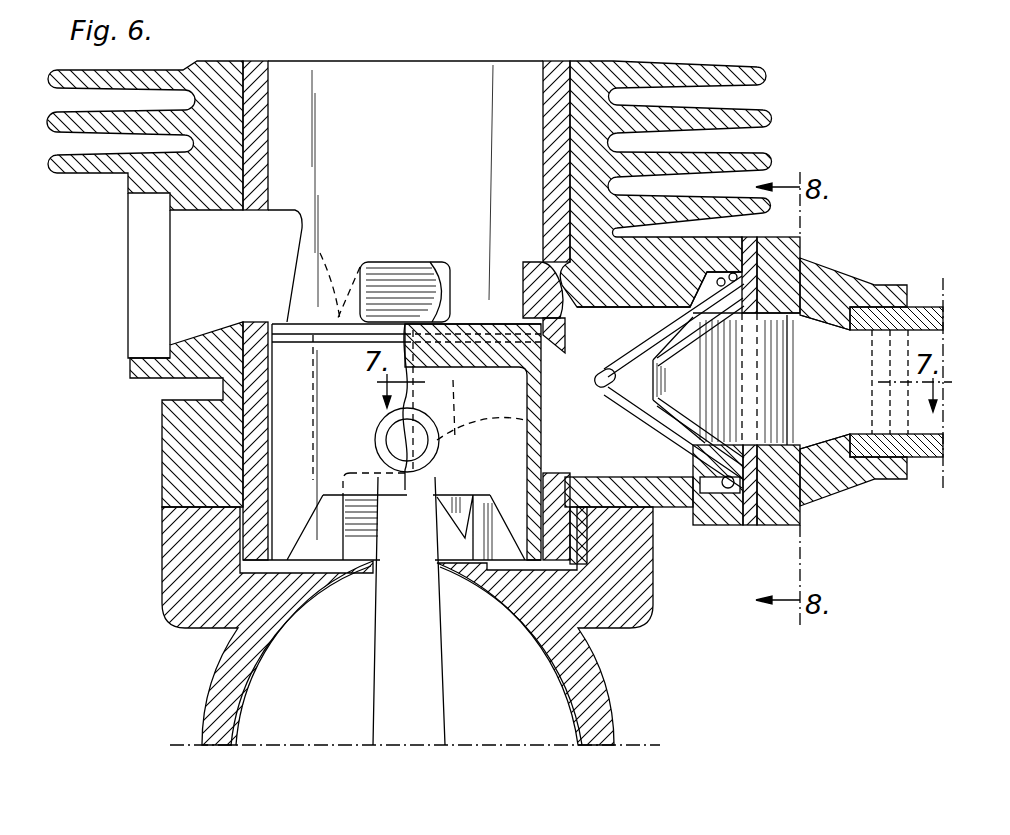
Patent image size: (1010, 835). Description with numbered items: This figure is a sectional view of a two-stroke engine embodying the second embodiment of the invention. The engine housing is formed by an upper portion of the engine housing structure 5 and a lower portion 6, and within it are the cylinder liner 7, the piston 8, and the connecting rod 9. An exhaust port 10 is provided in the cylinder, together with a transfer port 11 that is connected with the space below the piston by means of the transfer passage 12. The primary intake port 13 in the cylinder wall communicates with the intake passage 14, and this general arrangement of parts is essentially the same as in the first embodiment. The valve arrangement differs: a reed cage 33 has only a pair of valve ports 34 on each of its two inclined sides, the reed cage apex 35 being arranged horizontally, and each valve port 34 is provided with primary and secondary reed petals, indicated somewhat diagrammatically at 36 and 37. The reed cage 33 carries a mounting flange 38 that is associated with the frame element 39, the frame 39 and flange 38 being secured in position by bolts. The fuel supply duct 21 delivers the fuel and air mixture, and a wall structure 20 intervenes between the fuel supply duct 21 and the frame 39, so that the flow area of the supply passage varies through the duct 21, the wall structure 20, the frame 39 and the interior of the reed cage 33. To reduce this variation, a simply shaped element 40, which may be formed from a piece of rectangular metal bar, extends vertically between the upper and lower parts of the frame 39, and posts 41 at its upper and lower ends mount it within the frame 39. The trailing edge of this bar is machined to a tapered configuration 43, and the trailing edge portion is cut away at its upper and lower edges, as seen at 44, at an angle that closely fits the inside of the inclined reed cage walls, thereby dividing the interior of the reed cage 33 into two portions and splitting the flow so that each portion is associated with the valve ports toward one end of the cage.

The upper portion of the engine housing structure 5 is at (608, 72).
The lower portion of the engine housing structure 6 is at (173, 602).
The cylinder liner 7 is at (262, 68).
The piston 8 is at (483, 324).
The connecting rod 9 is at (438, 704).
The exhaust port 10 is at (170, 217).
The transfer port 11 is at (412, 262).
The transfer passage 12 is at (419, 363).
The primary intake port 13 is at (572, 380).
The intake passage 14 is at (827, 430).
The wall structure 20 is at (877, 285).
The fuel supply duct 21 is at (923, 308).
The reed cage 33 is at (737, 468).
The valve ports 34 is at (623, 394).
The reed cage apex 35 is at (600, 372).
The primary reed petal 36 is at (601, 407).
The secondary reed petal 37 is at (625, 325).
The mounting flange 38 is at (750, 523).
The frame element 39 is at (800, 253).
The element for reducing variation in flow passage cross section 40 is at (790, 388).
The posts 41 is at (792, 447).
The tapered trailing edge 43 is at (670, 393).
The cut-away edges 44 is at (670, 337).